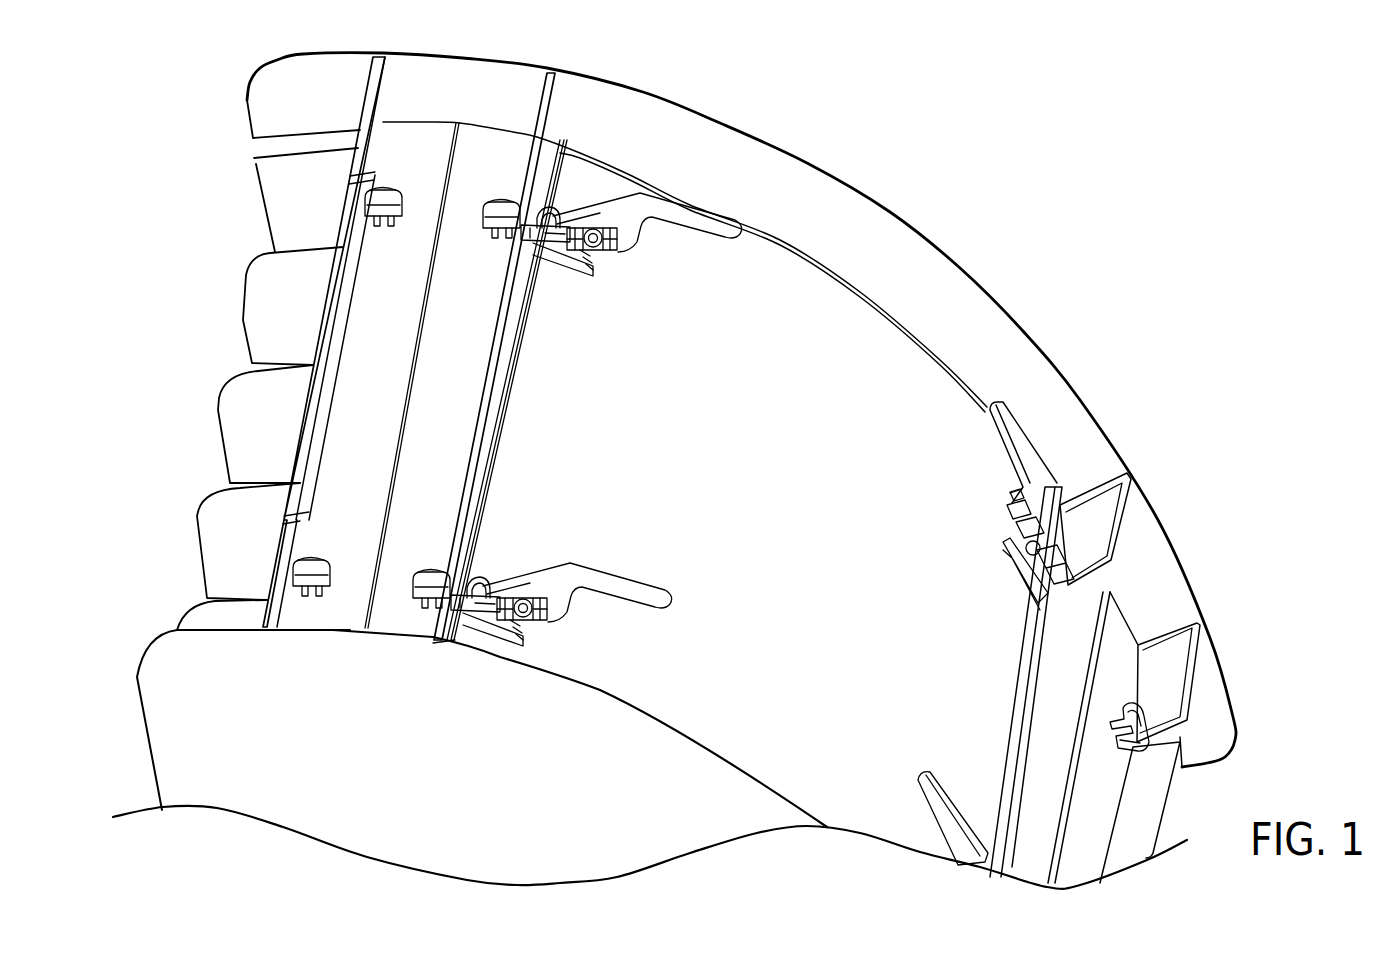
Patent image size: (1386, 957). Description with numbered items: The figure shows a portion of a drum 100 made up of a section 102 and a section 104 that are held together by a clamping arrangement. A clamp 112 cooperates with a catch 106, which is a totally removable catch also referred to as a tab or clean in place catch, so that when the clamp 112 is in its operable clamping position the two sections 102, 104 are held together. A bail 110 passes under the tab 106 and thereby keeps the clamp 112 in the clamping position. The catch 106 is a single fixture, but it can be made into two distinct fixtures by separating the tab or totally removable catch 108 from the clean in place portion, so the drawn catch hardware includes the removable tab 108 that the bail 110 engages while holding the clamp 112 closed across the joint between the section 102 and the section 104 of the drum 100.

The drum 100 is at (713, 665).
The section 102 is at (427, 470).
The section 104 is at (837, 313).
The catch 106 is at (497, 203).
The totally removable catch 108 is at (510, 217).
The bail 110 is at (550, 230).
The clamp 112 is at (577, 253).